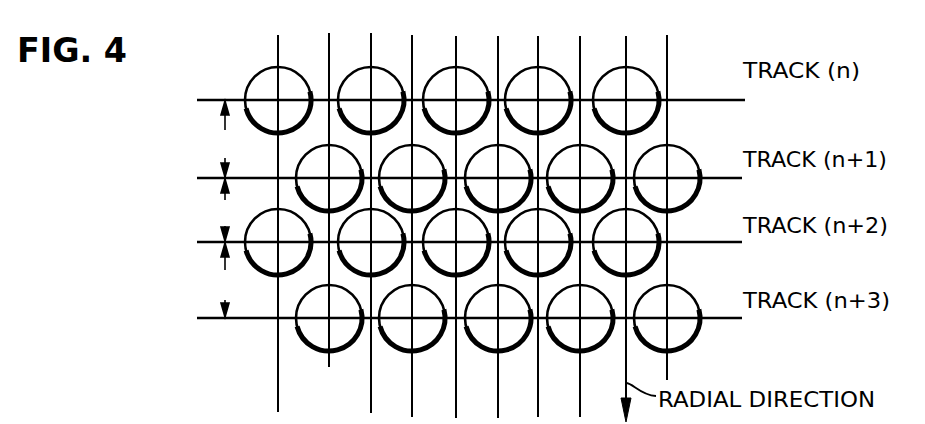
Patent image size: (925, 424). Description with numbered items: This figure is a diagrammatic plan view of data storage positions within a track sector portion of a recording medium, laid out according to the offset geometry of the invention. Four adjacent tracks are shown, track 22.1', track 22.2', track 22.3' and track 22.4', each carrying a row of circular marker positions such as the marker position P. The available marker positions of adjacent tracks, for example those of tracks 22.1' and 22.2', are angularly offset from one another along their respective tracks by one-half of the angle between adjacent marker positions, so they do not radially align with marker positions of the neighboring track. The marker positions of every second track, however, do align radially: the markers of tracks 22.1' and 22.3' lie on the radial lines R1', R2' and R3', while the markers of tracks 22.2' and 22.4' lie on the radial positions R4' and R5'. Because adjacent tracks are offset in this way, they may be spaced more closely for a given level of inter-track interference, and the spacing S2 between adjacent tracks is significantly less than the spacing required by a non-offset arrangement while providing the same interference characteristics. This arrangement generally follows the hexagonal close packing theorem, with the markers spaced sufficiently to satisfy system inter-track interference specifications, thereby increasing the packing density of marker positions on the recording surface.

The marker position P is at (240, 74).
The radial line R1' is at (457, 214).
The radial line R2' is at (541, 213).
The radial line R3' is at (629, 216).
The radial position R4' is at (501, 214).
The radial position R5' is at (583, 213).
The track 22.1' is at (497, 119).
The track 22.2' is at (497, 195).
The track 22.3' is at (497, 260).
The track 22.4' is at (497, 337).
The track spacing S2 is at (223, 209).